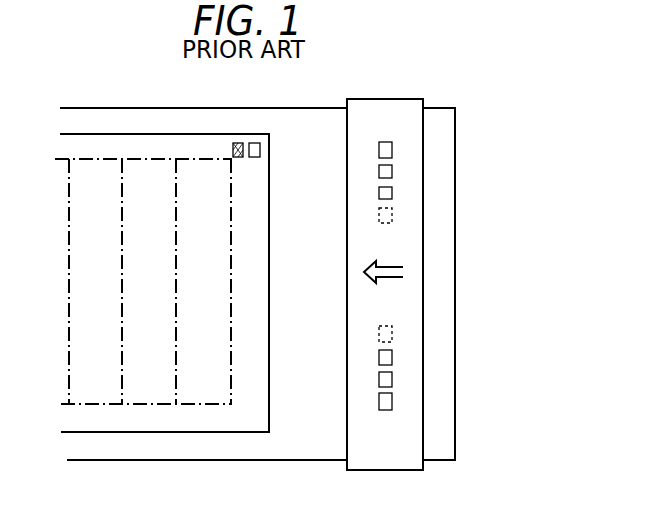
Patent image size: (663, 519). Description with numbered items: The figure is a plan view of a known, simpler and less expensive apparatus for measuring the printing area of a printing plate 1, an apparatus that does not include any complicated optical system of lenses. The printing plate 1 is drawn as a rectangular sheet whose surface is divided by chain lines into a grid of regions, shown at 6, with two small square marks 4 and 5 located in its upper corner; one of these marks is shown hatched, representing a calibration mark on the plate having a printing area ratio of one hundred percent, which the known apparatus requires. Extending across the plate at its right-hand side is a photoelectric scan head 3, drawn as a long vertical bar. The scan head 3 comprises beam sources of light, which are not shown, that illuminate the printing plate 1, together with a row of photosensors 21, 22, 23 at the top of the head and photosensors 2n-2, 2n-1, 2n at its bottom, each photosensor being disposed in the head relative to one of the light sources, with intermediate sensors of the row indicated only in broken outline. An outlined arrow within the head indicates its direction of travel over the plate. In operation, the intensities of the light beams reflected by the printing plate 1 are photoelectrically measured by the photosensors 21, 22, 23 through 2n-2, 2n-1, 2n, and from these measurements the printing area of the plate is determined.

The printing plate 1 is at (210, 418).
The photoelectric scan head 3 is at (387, 112).
The picture element 4 is at (263, 148).
The picture element (marked) 5 is at (240, 142).
The image area divided into blocks 6 is at (157, 405).
The photosensor 21 is at (392, 150).
The photosensor 22 is at (392, 172).
The photosensor 23 is at (392, 193).
The photosensor 2n-2 is at (392, 357).
The photosensor 2n-1 is at (392, 378).
The photosensor 2n is at (392, 400).